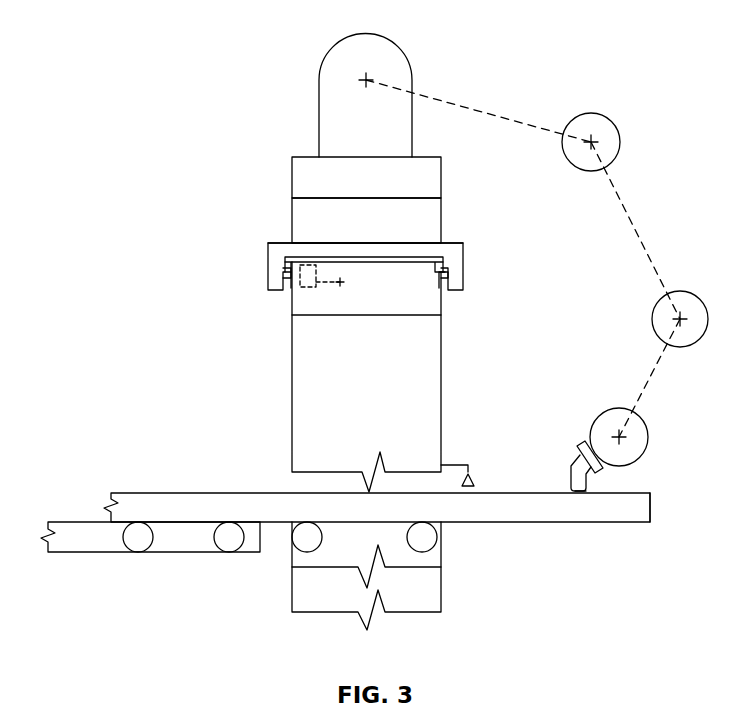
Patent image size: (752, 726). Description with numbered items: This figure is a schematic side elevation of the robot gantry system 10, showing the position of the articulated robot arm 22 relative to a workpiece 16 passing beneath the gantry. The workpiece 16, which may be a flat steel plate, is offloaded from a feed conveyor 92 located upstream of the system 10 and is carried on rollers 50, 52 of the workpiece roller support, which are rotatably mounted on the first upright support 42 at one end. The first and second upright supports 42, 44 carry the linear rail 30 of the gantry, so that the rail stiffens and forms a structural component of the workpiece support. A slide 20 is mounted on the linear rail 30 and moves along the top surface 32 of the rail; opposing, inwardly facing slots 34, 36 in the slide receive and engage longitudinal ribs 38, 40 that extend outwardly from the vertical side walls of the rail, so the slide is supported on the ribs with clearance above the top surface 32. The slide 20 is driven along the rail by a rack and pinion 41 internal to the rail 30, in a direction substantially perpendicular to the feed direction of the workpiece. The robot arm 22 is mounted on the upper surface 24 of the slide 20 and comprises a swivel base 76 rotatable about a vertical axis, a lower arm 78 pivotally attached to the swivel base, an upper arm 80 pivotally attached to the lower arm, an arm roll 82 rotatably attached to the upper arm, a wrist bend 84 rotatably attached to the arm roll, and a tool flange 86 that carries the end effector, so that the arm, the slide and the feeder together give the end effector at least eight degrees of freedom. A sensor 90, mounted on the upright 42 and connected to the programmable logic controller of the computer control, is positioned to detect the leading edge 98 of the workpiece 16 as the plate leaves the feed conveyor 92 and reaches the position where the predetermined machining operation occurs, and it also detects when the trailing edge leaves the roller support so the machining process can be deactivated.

The robot gantry system 10 is at (422, 70).
The workpiece 16 is at (598, 512).
The slide 20 is at (375, 236).
The articulated robot arm 22 is at (622, 116).
The upper surface 24 is at (453, 243).
The linear rail 30 is at (443, 312).
The top surface 32 is at (360, 257).
The slot 34 is at (283, 272).
The slot 36 is at (234, 261).
The longitudinal rib 38 is at (283, 291).
The longitudinal rib 40 is at (390, 316).
The rack and pinion 41 is at (340, 287).
The first upright support 42 is at (442, 377).
The second upright support 44 is at (305, 560).
The roller 50 is at (300, 541).
The roller 52 is at (430, 541).
The swivel base 76 is at (432, 180).
The lower arm 78 is at (470, 110).
The upper arm 80 is at (637, 230).
The arm roll 82 is at (652, 375).
The wrist bend 84 is at (607, 466).
The tool flange 86 is at (580, 450).
The sensor 90 is at (455, 465).
The feed conveyor 92 is at (93, 550).
The leading edge 98 is at (652, 508).